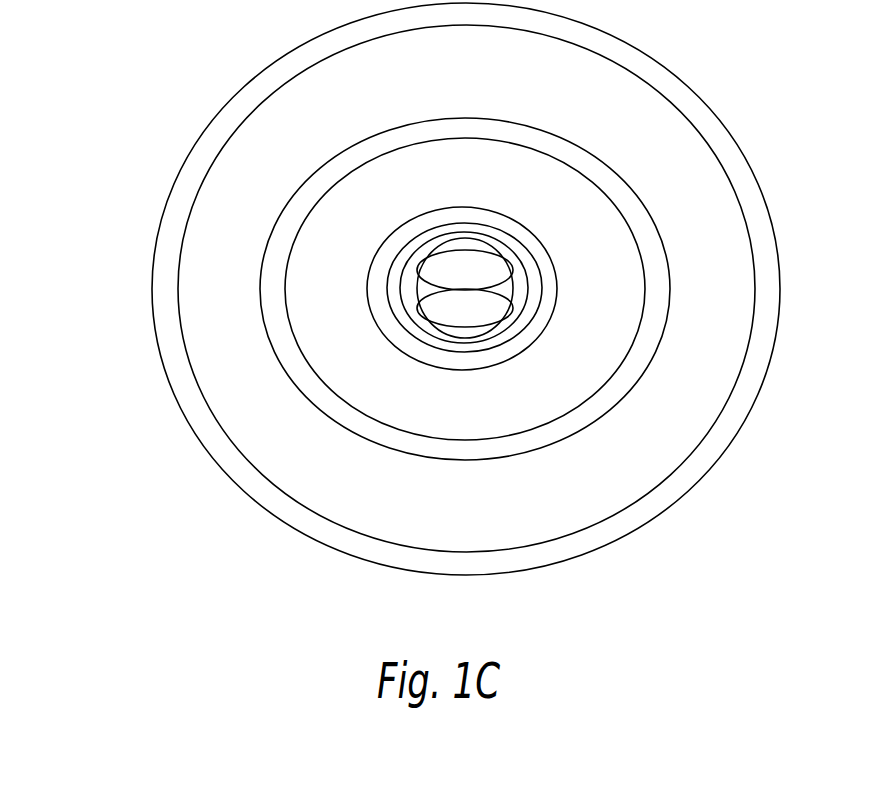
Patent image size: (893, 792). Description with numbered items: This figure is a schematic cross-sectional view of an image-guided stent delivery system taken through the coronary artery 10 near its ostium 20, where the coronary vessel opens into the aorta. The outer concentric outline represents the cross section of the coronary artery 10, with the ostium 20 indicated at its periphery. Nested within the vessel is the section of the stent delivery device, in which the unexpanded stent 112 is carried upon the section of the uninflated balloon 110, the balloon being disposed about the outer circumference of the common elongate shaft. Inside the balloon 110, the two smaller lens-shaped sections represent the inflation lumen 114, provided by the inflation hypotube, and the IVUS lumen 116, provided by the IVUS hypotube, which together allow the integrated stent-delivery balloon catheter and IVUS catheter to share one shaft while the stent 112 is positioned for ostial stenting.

The ostium 20 is at (110, 252).
The coronary vessel 10 is at (466, 118).
The stent 112 is at (466, 207).
The balloon 110 is at (427, 252).
The IVUS lumen 116 is at (503, 253).
The inflation lumen 114 is at (503, 324).